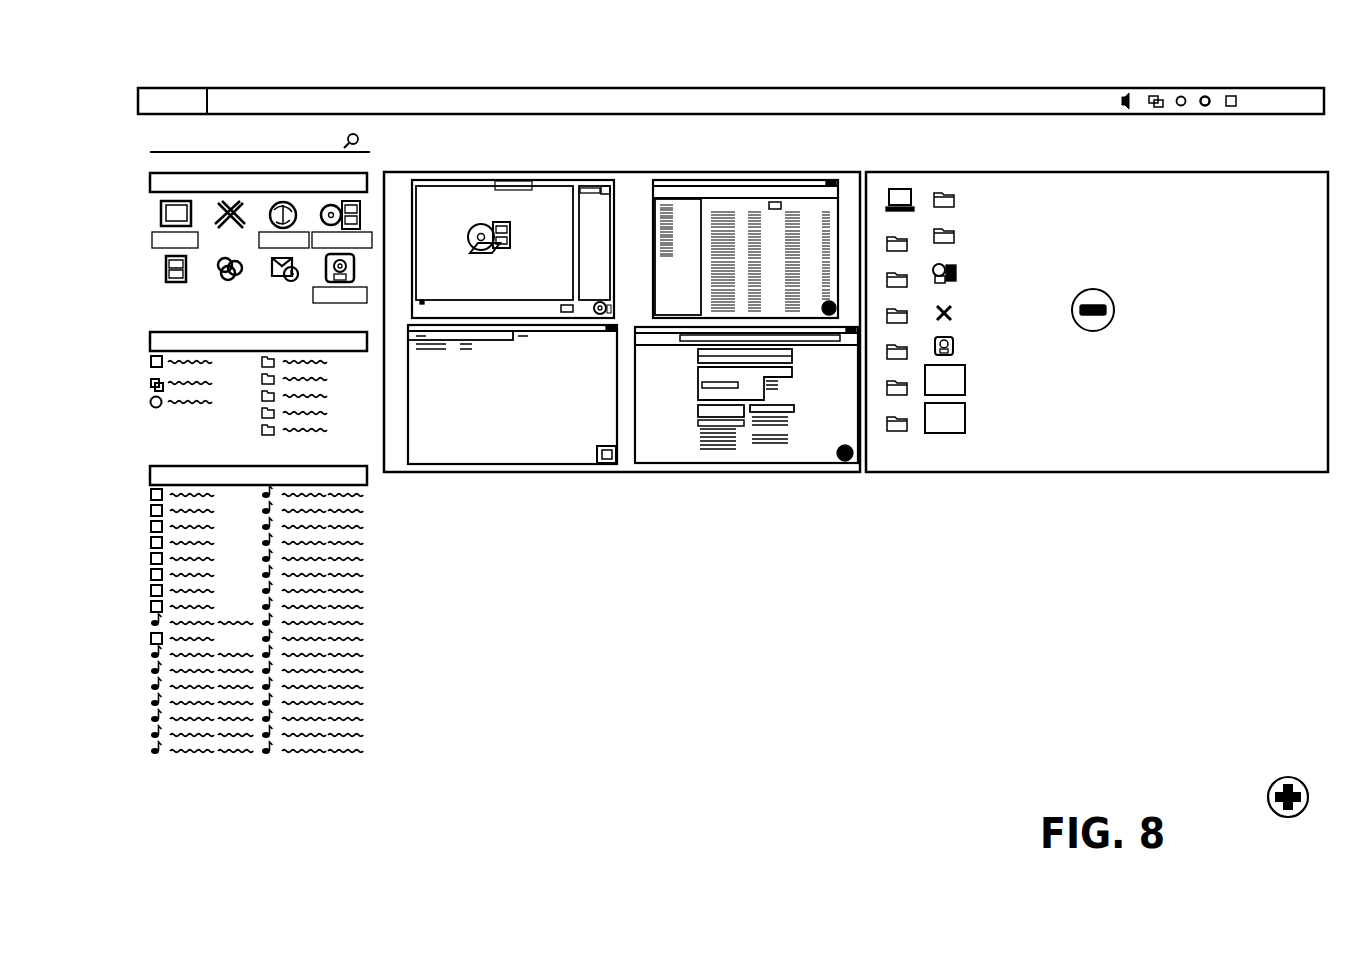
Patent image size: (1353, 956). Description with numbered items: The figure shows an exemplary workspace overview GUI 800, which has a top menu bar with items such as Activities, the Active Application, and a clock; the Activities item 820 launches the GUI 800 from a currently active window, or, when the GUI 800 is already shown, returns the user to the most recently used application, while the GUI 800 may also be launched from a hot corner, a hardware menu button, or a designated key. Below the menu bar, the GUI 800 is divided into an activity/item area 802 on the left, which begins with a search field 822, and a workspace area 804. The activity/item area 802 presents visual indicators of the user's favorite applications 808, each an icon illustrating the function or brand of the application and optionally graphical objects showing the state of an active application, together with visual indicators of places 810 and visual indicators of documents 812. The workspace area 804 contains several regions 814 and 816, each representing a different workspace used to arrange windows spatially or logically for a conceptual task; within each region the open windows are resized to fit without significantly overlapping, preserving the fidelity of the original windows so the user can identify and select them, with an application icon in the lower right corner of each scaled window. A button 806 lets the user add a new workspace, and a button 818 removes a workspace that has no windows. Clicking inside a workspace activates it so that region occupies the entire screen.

The workspace overview GUI 800 is at (696, 71).
The activity/item area 802 is at (223, 479).
The workspace area 804 is at (622, 523).
The button 806 is at (1283, 778).
The visual indicators of favorite applications 808 is at (150, 184).
The visual indicators of places 810 is at (150, 342).
The visual indicators of documents 812 is at (150, 476).
The region 814 is at (498, 452).
The region 816 is at (1097, 351).
The button 818 is at (1098, 288).
The activities button 820 is at (138, 102).
The search field 822 is at (150, 124).